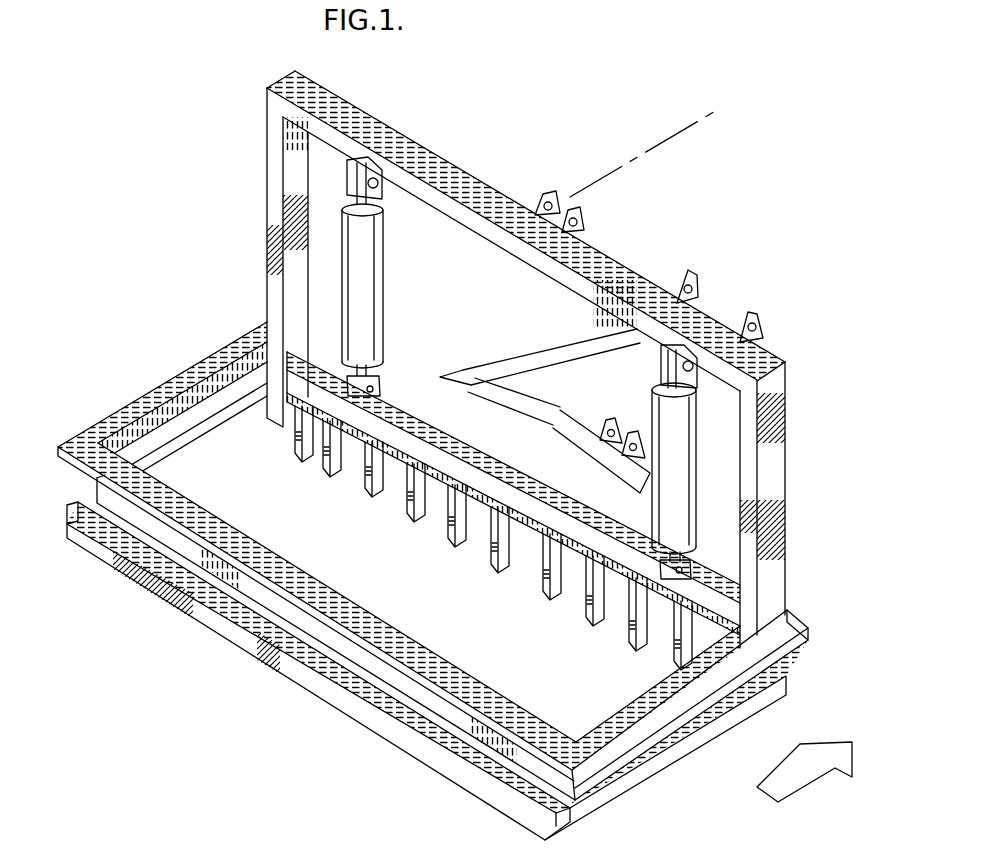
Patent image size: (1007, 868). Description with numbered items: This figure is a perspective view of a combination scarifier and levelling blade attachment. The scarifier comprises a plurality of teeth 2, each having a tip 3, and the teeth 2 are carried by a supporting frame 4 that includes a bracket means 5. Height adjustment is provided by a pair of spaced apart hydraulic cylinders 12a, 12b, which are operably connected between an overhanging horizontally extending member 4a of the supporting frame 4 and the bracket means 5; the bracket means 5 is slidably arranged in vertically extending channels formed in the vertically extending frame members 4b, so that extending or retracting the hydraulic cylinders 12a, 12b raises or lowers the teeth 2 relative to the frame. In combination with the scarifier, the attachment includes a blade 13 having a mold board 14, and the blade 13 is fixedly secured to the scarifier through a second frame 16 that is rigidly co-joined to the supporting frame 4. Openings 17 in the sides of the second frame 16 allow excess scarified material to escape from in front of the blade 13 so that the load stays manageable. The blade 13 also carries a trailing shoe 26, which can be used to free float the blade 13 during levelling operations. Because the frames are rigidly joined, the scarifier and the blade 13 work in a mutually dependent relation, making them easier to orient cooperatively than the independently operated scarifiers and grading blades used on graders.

The teeth 2 is at (482, 560).
The tips 3 is at (477, 522).
The supporting frame 4 is at (528, 359).
The overhanging horizontally extending member 4a is at (623, 273).
The vertically extending frame members 4b is at (275, 171).
The bracket means 5 is at (411, 413).
The hydraulic cylinder 12a is at (688, 466).
The hydraulic cylinder 12b is at (377, 300).
The blade 13 is at (277, 567).
The mold board 14 is at (390, 687).
The second frame 16 is at (173, 392).
The openings 17 is at (182, 437).
The trailing shoe 26 is at (300, 673).